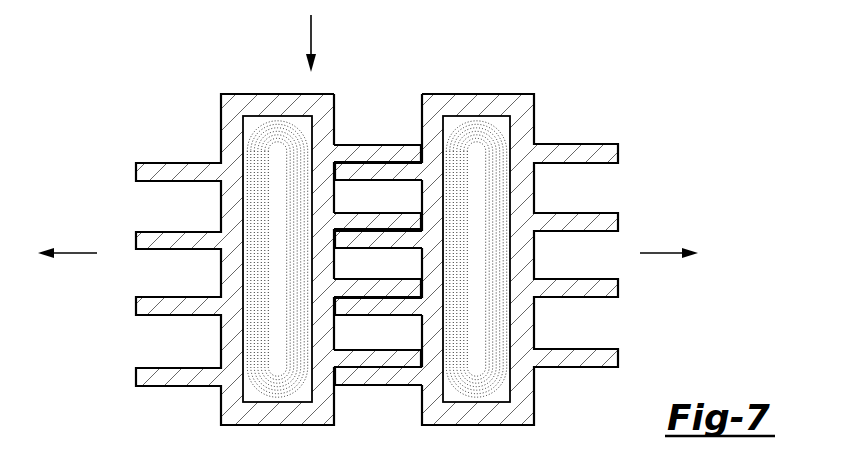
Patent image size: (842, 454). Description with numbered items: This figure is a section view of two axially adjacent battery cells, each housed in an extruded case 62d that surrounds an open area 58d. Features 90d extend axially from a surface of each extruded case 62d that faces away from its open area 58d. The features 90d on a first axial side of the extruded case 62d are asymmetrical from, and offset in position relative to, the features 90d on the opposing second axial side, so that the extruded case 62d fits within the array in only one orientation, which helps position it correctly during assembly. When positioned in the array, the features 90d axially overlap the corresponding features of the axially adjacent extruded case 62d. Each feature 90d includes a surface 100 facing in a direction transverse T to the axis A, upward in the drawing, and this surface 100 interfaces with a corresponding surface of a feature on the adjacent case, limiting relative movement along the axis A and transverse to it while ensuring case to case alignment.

The extruded case 62d is at (278, 225).
The features 90d is at (363, 143).
The surface 100 is at (380, 182).
The open area 58d is at (264, 272).
The transverse direction T is at (312, 38).
The axis A is at (666, 252).